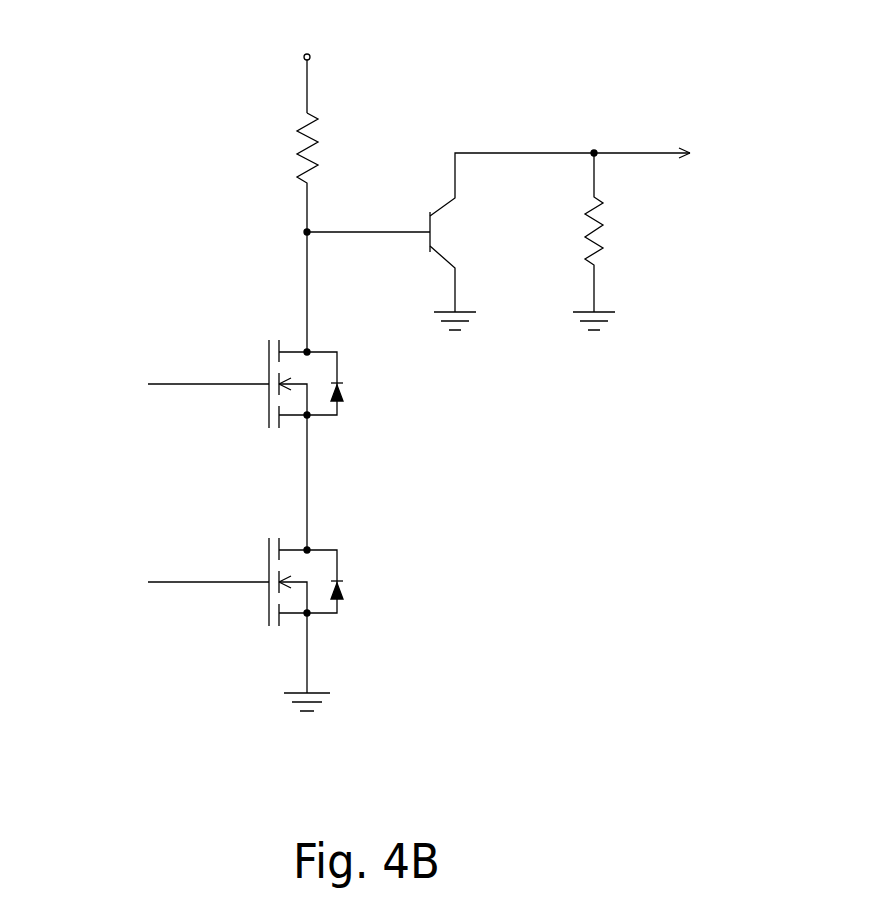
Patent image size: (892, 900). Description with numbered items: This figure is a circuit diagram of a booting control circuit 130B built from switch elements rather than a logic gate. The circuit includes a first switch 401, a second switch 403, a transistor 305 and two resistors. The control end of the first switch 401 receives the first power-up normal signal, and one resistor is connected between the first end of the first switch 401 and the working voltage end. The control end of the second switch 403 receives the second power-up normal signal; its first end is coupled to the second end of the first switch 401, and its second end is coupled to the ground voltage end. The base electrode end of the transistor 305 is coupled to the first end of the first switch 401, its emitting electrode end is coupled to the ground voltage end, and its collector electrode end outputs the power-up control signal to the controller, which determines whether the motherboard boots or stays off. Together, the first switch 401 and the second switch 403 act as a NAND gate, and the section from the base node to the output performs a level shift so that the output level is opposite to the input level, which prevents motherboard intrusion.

The power gating circuit 130B is at (441, 384).
The transistor 305 is at (547, 239).
The first switch 401 is at (271, 385).
The second switch 403 is at (273, 585).